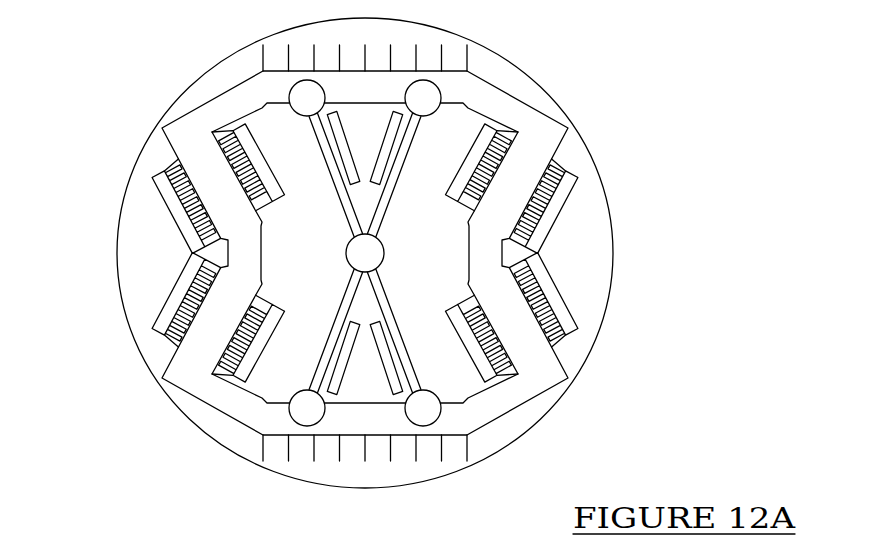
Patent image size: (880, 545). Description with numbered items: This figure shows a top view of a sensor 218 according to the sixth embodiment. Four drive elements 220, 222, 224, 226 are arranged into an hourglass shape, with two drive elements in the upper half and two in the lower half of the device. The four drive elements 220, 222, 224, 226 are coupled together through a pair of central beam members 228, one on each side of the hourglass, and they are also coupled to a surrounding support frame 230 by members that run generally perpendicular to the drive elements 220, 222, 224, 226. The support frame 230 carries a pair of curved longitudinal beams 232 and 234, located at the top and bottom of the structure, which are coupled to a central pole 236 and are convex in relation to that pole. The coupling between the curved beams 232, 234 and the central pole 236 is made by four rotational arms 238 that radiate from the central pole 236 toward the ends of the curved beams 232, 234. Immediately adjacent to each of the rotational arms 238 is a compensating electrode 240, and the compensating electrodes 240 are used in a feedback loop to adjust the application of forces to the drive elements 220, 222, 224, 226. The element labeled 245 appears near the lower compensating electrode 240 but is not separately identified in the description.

The sensor 218 is at (193, 60).
The drive element 220 is at (172, 153).
The drive element 222 is at (176, 360).
The drive element 224 is at (554, 360).
The drive element 226 is at (560, 147).
The central beam member 228 is at (263, 258).
The support frame 230 is at (186, 108).
The curved longitudinal beam 232 is at (418, 72).
The curved longitudinal beam 234 is at (427, 438).
The central pole 236 is at (383, 252).
The rotational arm 238 is at (341, 205).
The compensating electrode 240 is at (348, 152).
The flexure end 245 is at (391, 384).